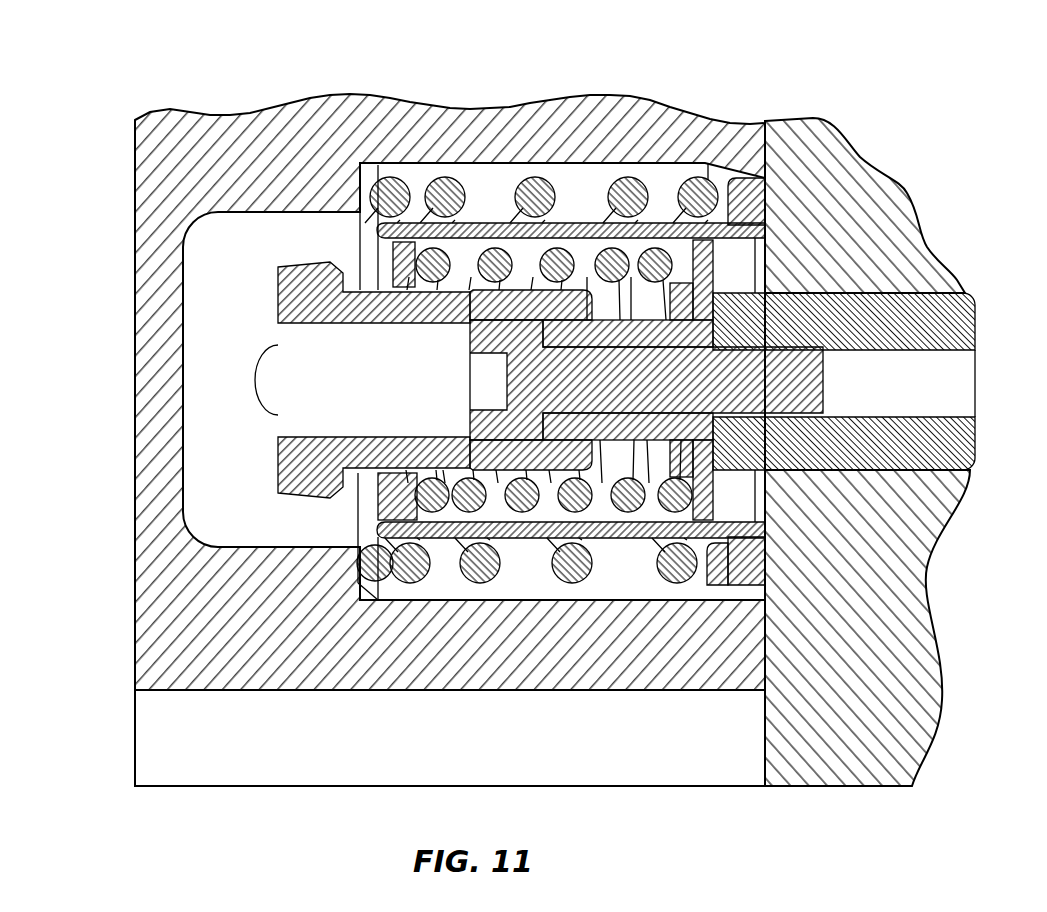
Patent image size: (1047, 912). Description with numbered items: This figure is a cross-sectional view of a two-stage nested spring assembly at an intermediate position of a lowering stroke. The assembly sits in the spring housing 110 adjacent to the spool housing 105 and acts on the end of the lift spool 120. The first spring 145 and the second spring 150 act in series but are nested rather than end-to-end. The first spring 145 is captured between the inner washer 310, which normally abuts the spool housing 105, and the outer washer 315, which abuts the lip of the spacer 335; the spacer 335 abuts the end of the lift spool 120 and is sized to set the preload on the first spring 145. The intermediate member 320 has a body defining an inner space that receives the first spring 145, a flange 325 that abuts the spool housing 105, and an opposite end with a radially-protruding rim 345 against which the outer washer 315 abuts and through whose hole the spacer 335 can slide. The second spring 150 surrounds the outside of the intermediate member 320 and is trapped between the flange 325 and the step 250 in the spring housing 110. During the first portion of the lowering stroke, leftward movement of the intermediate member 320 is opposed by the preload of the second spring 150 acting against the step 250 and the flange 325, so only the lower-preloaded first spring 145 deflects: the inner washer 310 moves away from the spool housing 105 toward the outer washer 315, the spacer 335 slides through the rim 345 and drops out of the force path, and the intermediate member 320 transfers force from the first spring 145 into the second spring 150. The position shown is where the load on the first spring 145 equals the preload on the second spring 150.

The spool housing 105 is at (820, 768).
The spring housing 110 is at (152, 668).
The lift spool 120 is at (947, 442).
The first spring 145 is at (628, 502).
The second spring 150 is at (486, 578).
The step 250 is at (383, 178).
The inner washer 310 is at (713, 500).
The outer washer 315 is at (403, 513).
The intermediate member 320 is at (532, 545).
The flange 325 is at (745, 585).
The spacer 335 is at (251, 502).
The rim 345 is at (363, 513).